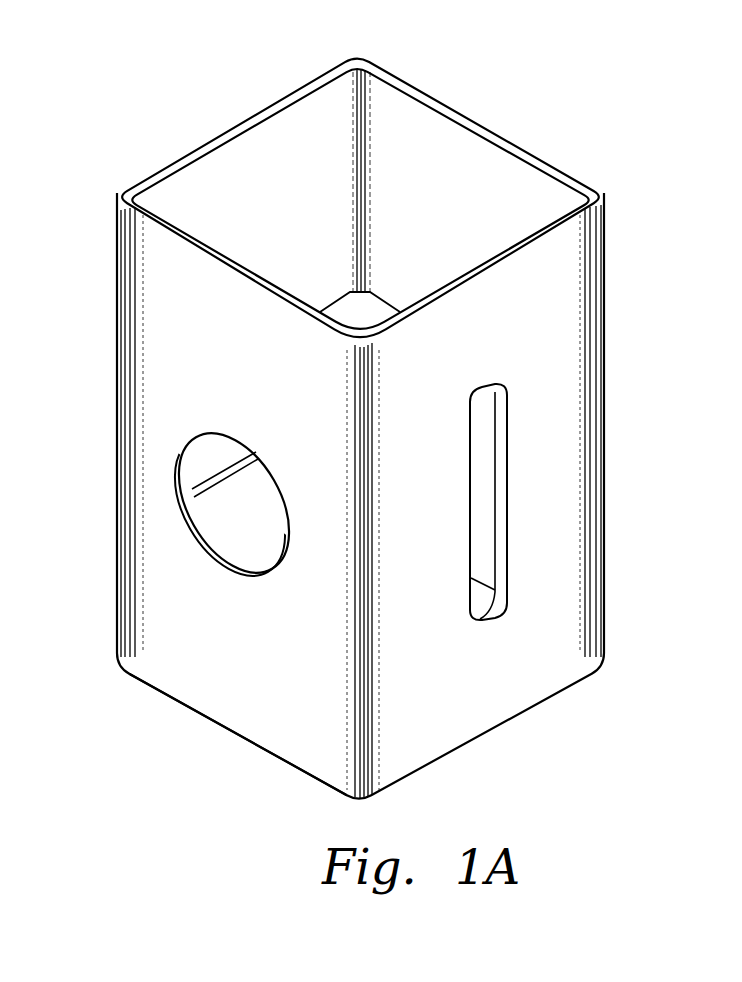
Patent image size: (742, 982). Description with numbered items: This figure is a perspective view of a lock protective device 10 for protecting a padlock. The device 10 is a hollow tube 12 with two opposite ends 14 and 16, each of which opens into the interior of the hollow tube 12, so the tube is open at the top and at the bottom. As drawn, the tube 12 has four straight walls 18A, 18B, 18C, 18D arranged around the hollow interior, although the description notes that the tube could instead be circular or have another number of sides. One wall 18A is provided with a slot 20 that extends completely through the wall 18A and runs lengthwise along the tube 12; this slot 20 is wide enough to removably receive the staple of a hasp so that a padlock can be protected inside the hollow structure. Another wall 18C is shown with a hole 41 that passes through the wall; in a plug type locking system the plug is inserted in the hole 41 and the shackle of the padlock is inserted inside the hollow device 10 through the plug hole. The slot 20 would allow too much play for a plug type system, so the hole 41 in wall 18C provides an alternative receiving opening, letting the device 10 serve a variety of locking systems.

The lock protective device 10 is at (573, 715).
The hollow tube 12 is at (553, 312).
The end 14 is at (478, 110).
The end 16 is at (263, 752).
The wall 18A is at (547, 545).
The wall 18B is at (509, 195).
The wall 18C is at (187, 632).
The wall 18D is at (272, 190).
The slot 20 is at (485, 462).
The hole 41 is at (195, 442).